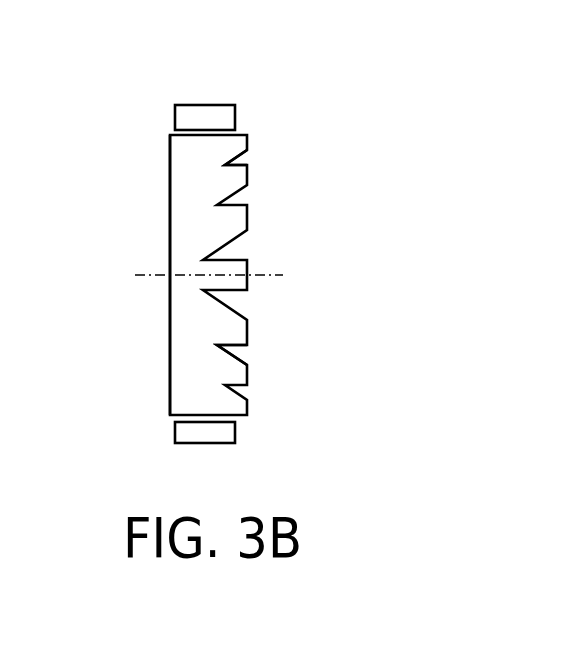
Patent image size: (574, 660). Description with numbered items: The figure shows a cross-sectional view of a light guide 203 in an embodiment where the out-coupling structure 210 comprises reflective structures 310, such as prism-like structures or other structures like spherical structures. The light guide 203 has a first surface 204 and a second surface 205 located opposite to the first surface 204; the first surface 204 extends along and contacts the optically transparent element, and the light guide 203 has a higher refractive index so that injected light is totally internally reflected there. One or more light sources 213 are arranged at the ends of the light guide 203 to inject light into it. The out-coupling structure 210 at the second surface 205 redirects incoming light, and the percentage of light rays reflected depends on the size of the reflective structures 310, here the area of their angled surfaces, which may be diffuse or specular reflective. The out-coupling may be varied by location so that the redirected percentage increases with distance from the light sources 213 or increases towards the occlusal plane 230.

The light guide 203 is at (170, 319).
The first surface 204 is at (170, 178).
The second surface 205 is at (248, 173).
The out-coupling structure 210 is at (305, 358).
The reflective structures 310 is at (246, 350).
The light sources 213 is at (205, 105).
The occlusal plane 230 is at (230, 275).